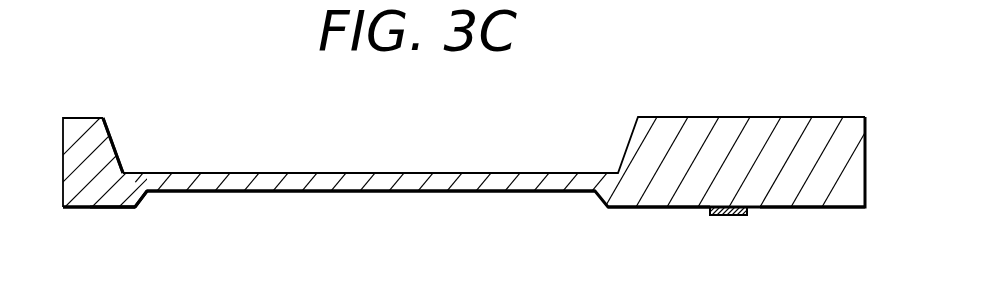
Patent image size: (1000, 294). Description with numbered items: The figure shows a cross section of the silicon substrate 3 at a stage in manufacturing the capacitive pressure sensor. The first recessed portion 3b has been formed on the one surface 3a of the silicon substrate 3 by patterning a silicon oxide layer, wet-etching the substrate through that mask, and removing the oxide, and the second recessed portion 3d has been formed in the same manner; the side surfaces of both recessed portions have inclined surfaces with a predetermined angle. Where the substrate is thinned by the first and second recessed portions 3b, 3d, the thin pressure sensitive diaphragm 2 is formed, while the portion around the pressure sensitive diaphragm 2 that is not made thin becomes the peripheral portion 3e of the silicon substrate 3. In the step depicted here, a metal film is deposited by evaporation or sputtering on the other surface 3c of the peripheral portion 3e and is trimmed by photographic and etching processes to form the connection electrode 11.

The pressure sensitive diaphragm 2 is at (410, 182).
The silicon substrate 3 is at (855, 155).
The one surface 3a is at (83, 118).
The first recessed portion 3b is at (112, 141).
The other surface 3c is at (77, 208).
The second recessed portion 3d is at (145, 200).
The peripheral portion 3e is at (118, 208).
The connection electrode 11 is at (728, 215).